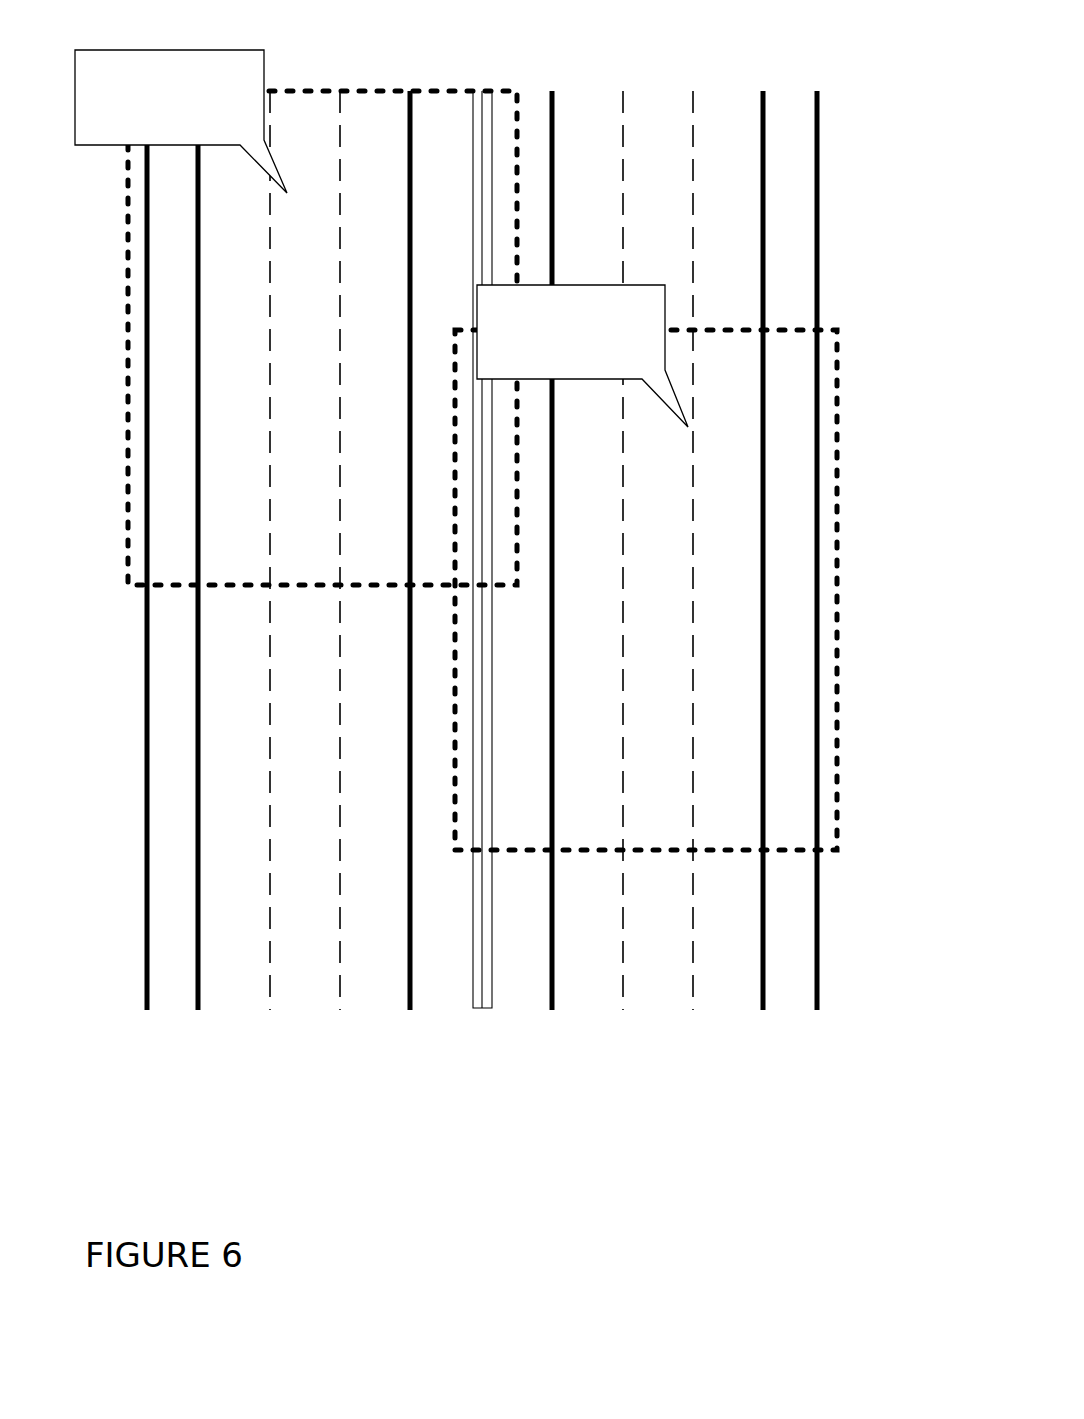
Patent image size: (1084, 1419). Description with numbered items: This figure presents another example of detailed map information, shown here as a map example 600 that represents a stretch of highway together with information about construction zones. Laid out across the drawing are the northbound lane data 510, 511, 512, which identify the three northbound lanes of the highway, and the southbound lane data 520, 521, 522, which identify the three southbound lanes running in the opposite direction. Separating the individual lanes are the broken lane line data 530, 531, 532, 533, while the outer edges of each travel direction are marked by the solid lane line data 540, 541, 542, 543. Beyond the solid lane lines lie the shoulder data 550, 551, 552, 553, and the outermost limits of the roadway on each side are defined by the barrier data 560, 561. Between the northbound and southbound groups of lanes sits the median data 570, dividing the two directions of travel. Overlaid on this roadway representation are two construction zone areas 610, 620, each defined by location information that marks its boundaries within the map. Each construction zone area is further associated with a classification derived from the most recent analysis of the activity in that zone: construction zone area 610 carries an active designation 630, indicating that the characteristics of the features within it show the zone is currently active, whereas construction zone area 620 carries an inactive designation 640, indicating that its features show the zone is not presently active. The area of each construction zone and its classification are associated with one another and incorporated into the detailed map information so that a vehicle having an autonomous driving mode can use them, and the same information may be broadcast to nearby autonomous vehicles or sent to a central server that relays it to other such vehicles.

The semiconductor device layout 600 is at (183, 1212).
The construction zone area 610 is at (840, 587).
The construction zone area 620 is at (125, 585).
The active designation 630 is at (665, 320).
The inactive designation 640 is at (95, 145).
The northbound lane data 510 is at (728, 92).
The northbound lane data 511 is at (657, 92).
The northbound lane data 512 is at (587, 90).
The southbound lane data 520 is at (473, 90).
The southbound lane data 521 is at (305, 90).
The southbound lane data 522 is at (265, 53).
The broken lane line data 530 is at (693, 1010).
The broken lane line data 531 is at (622, 1010).
The broken lane line data 532 is at (338, 1008).
The broken lane line data 533 is at (268, 1008).
The solid lane line data 540 is at (763, 1010).
The solid lane line data 541 is at (552, 1010).
The solid lane line data 542 is at (410, 1010).
The solid lane line data 543 is at (198, 1010).
The shoulder data 550 is at (790, 92).
The shoulder data 551 is at (215, 50).
The shoulder data 552 is at (445, 1008).
The shoulder data 553 is at (520, 90).
The barrier data 560 is at (817, 1010).
The barrier data 561 is at (147, 1010).
The median data 570 is at (482, 90).